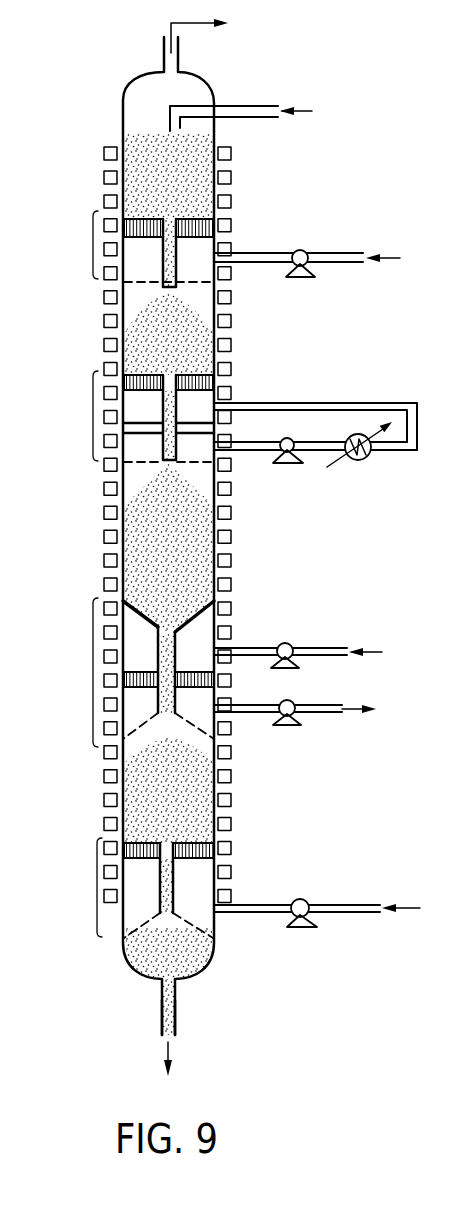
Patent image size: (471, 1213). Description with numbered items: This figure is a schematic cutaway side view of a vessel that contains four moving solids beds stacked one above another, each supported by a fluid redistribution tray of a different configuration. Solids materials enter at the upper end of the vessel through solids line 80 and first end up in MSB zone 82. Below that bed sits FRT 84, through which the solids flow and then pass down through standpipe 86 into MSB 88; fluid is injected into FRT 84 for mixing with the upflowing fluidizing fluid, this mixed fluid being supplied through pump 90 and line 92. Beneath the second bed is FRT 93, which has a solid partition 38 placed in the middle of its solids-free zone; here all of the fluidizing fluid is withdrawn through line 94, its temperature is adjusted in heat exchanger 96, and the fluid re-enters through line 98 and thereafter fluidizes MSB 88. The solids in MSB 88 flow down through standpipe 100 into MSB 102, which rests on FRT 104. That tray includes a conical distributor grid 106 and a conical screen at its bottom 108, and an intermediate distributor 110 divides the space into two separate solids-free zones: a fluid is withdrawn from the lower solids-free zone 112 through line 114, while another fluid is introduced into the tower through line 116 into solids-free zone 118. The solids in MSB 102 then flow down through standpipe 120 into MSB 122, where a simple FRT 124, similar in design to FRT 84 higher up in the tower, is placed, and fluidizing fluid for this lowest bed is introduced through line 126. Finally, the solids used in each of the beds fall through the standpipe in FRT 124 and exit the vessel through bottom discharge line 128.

The solids line 80 is at (250, 106).
The MSB zone 82 is at (178, 188).
The FRT 84 is at (90, 243).
The standpipe 86 is at (176, 257).
The MSB 88 is at (178, 357).
The pump 90 is at (303, 255).
The line 92 is at (277, 253).
The FRT 93 is at (90, 415).
The line 94 is at (243, 442).
The heat exchanger 96 is at (367, 459).
The line 98 is at (337, 403).
The standpipe 100 is at (162, 407).
The solid partition 38 is at (193, 422).
The MSB 102 is at (178, 567).
The FRT 104 is at (92, 658).
The conical distributor grid 106 is at (197, 633).
The conical screen 108 is at (198, 733).
The intermediate distributor 110 is at (212, 685).
The lower solids-free zone 112 is at (202, 712).
The line 114 is at (267, 705).
The line 116 is at (260, 647).
The solids-free zone 118 is at (200, 665).
The standpipe 120 is at (157, 698).
The MSB 122 is at (177, 817).
The FRT 124 is at (95, 883).
The line 126 is at (257, 903).
The bottom discharge line 128 is at (175, 1005).